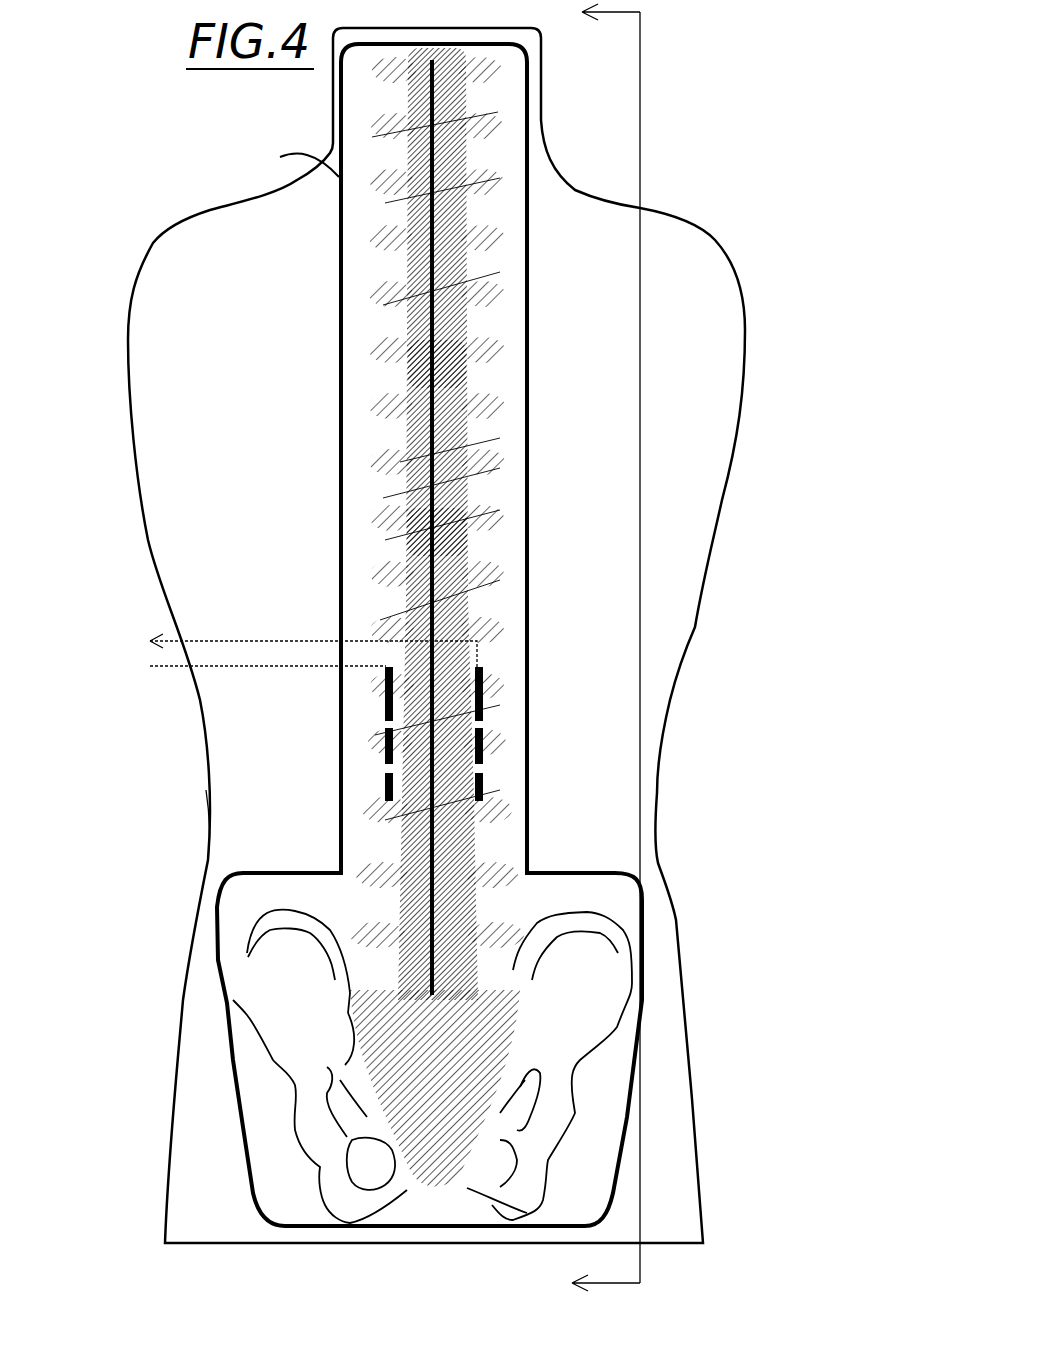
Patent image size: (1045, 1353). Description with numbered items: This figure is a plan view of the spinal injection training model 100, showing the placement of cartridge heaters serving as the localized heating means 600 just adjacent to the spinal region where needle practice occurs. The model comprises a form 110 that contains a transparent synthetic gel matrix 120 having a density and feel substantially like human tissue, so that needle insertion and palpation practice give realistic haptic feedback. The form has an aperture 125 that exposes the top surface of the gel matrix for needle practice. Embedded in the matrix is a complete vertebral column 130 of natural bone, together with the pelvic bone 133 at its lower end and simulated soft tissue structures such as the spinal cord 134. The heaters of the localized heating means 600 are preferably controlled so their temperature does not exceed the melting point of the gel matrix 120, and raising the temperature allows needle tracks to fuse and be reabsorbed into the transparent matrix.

The spinal model 100 is at (84, 227).
The form 110 is at (712, 238).
The synthetic gel matrix 120 is at (368, 392).
The aperture 125 is at (282, 157).
The vertebral column 130 is at (474, 532).
The pelvic bone 133 is at (273, 1033).
The spinal cord 134 is at (448, 364).
The localized heating means 600 is at (385, 697).